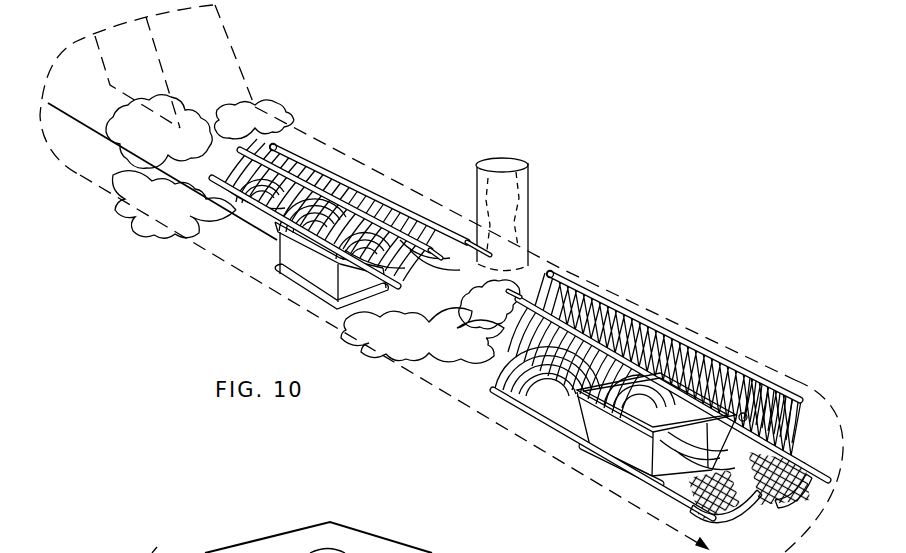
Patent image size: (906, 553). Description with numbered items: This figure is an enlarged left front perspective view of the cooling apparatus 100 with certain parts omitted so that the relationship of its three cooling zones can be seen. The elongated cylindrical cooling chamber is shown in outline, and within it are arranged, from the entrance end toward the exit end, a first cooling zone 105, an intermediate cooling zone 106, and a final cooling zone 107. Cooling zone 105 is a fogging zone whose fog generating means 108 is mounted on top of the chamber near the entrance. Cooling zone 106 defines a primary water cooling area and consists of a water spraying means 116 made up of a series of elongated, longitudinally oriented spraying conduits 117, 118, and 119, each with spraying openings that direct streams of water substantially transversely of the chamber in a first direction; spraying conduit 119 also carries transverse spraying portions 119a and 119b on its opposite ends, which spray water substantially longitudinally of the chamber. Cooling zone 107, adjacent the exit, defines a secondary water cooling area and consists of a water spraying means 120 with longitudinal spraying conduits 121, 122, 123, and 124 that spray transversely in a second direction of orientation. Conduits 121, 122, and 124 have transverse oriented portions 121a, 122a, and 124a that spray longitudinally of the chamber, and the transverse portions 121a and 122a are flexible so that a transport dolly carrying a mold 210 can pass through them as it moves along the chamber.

The cooling apparatus 100 is at (413, 377).
The cooling zone 105 is at (100, 136).
The cooling zone 106 is at (276, 240).
The cooling zone 107 is at (497, 385).
The fog generating means 108 is at (219, 87).
The water spraying means 116 is at (327, 175).
The spraying conduit 117 is at (399, 288).
The spraying conduit 118 is at (397, 200).
The spraying conduit 119 is at (360, 185).
The transverse spraying portion 119a is at (280, 137).
The transverse spraying portion 119b is at (439, 264).
The water spraying means 120 is at (630, 327).
The spraying conduit 121 is at (680, 497).
The transverse oriented portion 121a is at (743, 517).
The spraying conduit 122 is at (780, 447).
The transverse oriented portion 122a is at (780, 503).
The spraying conduit 123 is at (508, 293).
The spraying conduit 124 is at (770, 381).
The transverse oriented portion 124a is at (538, 272).
The mold 210 is at (316, 273).